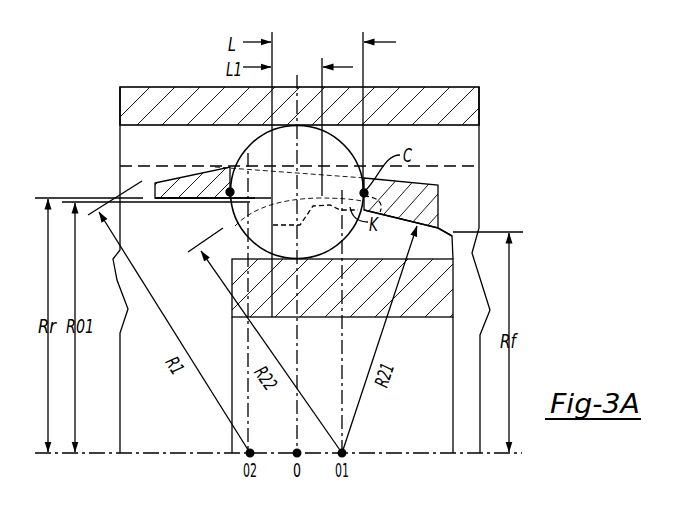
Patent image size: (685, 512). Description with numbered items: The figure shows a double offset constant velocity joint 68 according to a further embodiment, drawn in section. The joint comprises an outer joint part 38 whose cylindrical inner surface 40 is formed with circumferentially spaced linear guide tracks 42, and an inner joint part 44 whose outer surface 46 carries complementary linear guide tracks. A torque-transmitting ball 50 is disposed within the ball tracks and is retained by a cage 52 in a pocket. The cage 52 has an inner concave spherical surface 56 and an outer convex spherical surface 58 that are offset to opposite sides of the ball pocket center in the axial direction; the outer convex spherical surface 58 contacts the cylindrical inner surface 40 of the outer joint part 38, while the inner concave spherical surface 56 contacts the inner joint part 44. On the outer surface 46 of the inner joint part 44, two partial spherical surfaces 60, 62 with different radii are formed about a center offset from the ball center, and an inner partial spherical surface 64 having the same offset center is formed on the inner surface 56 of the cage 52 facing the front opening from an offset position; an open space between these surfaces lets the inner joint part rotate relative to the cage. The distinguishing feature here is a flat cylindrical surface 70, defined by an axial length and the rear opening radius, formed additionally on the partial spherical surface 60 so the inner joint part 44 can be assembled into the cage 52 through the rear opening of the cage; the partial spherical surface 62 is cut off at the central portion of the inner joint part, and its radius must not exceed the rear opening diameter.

The outer joint part 38 is at (182, 96).
The cylindrical inner surface 40 is at (473, 137).
The linear guide tracks 42 is at (473, 147).
The inner joint part 44 is at (430, 305).
The outer surface 46 is at (455, 214).
The torque-transmitting balls 50 is at (243, 152).
The cage 52 is at (185, 182).
The inner concave spherical surface 56 is at (183, 200).
The outer convex spherical surface 58 is at (430, 183).
The partial spherical surface 60 is at (449, 221).
The partial spherical surface 62 is at (243, 226).
The inner partial spherical surface 64 is at (379, 214).
The double offset constant velocity joint 68 is at (91, 107).
The flat cylindrical surface 70 is at (323, 222).